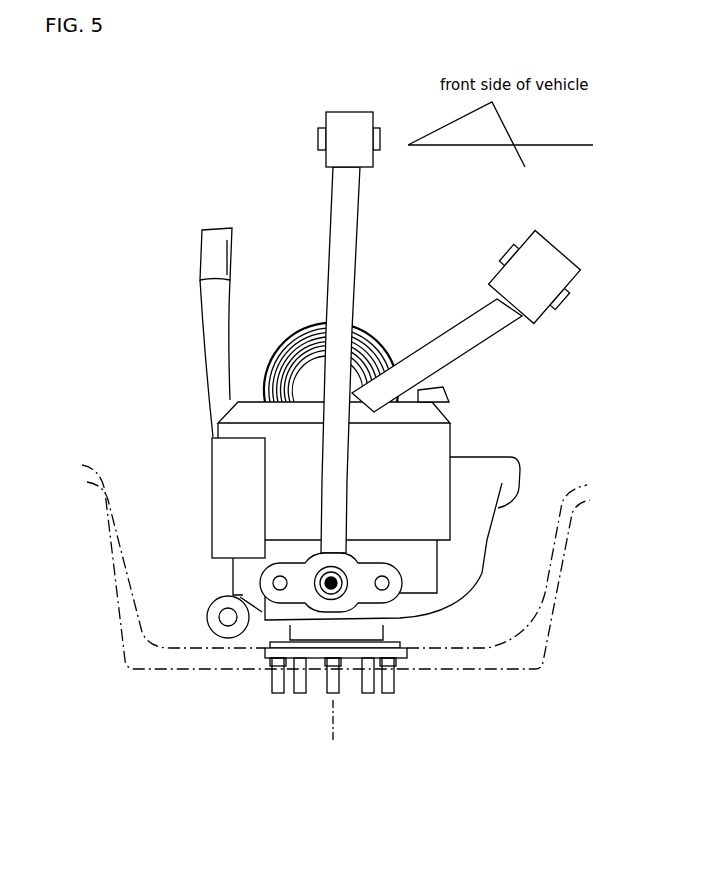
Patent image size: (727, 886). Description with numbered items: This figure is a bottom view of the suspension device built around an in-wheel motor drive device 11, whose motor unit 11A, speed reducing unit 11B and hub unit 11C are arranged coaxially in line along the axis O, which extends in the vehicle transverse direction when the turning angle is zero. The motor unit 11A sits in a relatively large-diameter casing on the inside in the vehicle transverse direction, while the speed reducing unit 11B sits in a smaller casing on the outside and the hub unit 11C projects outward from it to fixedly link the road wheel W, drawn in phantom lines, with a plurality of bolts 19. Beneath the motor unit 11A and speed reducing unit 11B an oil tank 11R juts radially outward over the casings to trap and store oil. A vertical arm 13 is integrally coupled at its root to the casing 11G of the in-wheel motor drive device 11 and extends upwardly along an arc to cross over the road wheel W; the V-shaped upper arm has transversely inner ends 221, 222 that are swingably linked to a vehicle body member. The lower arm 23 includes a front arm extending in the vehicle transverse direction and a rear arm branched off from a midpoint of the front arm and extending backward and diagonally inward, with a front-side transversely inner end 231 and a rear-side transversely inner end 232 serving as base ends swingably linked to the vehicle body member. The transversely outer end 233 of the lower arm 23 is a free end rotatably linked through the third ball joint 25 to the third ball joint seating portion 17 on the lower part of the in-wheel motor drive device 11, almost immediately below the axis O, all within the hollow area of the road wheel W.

The in-wheel motor drive device 11 is at (460, 612).
The motor unit 11A is at (420, 442).
The speed reducing unit 11B is at (420, 520).
The hub unit 11C is at (272, 655).
The casing 11G is at (262, 608).
The oil tank 11R is at (225, 508).
The vertical arm 13 is at (493, 472).
The third ball joint seating portion 17 is at (300, 593).
The bolts 19 is at (390, 696).
The lower arm 23 is at (470, 343).
The third ball joint 25 is at (340, 597).
The transversely inner end 221 is at (210, 236).
The transversely inner end 222 is at (433, 392).
The front-side transversely inner end 231 is at (350, 123).
The rear-side transversely inner end 232 is at (553, 257).
The transversely outer end 233 is at (345, 538).
The road wheel W is at (550, 617).
The axis O is at (334, 733).